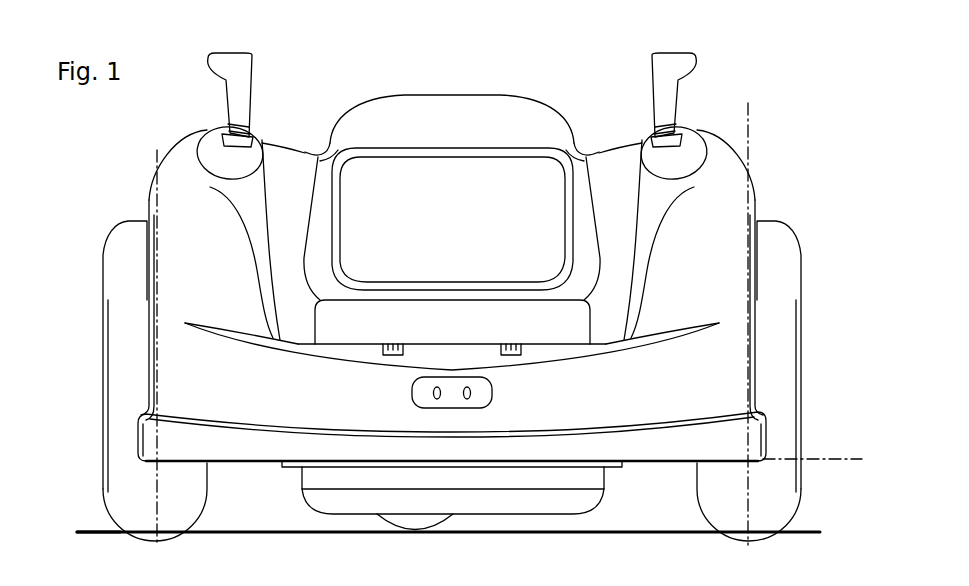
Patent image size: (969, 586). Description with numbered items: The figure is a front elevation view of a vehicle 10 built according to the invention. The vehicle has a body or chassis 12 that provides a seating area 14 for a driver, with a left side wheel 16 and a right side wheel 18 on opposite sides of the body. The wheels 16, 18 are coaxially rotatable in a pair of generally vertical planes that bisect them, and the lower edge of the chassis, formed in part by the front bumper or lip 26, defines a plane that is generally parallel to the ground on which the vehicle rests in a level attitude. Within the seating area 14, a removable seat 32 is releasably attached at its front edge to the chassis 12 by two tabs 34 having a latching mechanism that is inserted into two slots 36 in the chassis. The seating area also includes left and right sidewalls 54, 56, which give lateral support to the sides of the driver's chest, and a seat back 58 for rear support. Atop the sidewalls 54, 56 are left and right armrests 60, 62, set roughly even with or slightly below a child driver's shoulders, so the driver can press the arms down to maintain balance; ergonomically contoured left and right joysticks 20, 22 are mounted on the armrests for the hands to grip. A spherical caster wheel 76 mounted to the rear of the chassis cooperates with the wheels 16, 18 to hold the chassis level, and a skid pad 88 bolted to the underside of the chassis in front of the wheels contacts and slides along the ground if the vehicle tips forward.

The vehicle 10 is at (143, 172).
The body or chassis 12 is at (172, 160).
The seating area 14 is at (313, 133).
The left side wheel 16 is at (777, 245).
The right side wheel 18 is at (120, 248).
The left joystick 20 is at (670, 58).
The right joystick 22 is at (237, 58).
The front bumper or lip 26 is at (232, 455).
The removable seat 32 is at (420, 315).
The tabs 34 is at (388, 345).
The slots 36 is at (382, 356).
The left sidewall 54 is at (640, 208).
The right sidewall 56 is at (267, 210).
The seat back 58 is at (405, 168).
The left armrest 60 is at (642, 138).
The right armrest 62 is at (192, 127).
The spherical caster wheel 76 is at (415, 524).
The skid pad 88 is at (520, 503).